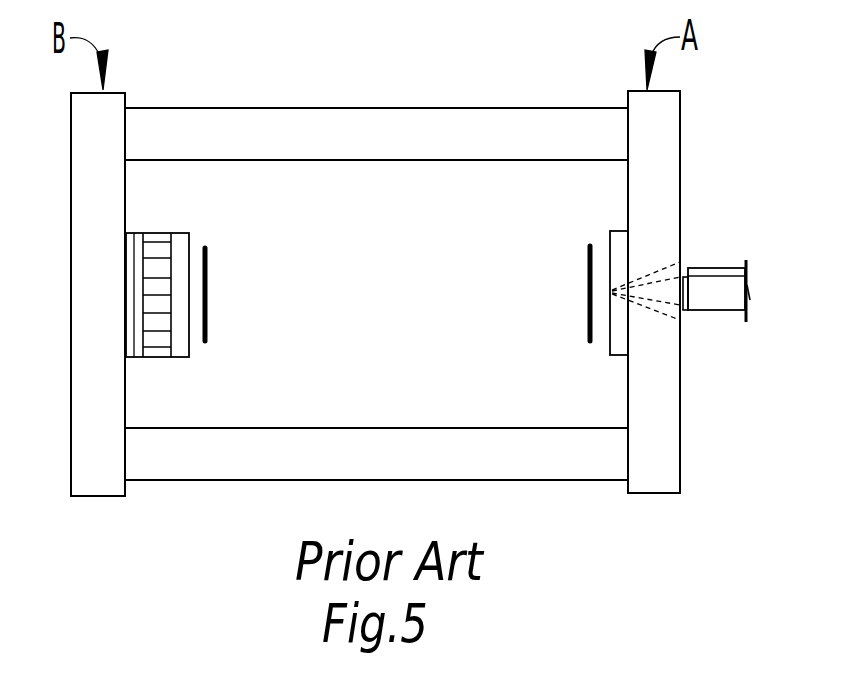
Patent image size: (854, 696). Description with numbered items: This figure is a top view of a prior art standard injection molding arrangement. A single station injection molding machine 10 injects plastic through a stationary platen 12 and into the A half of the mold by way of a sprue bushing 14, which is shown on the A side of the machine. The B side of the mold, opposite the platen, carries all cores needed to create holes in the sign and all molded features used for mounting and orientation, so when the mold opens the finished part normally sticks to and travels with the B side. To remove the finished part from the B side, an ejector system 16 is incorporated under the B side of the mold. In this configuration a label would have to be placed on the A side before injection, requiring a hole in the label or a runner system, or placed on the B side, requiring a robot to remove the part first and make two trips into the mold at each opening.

The single station injection molding machine 10 is at (405, 65).
The stationary platen 12 is at (680, 153).
The sprue bushing 14 is at (717, 267).
The ejector system 16 is at (178, 233).